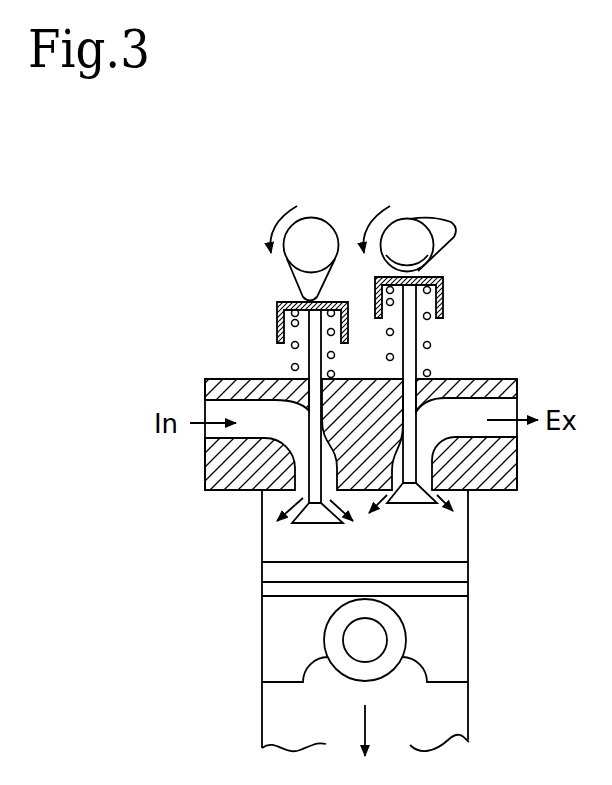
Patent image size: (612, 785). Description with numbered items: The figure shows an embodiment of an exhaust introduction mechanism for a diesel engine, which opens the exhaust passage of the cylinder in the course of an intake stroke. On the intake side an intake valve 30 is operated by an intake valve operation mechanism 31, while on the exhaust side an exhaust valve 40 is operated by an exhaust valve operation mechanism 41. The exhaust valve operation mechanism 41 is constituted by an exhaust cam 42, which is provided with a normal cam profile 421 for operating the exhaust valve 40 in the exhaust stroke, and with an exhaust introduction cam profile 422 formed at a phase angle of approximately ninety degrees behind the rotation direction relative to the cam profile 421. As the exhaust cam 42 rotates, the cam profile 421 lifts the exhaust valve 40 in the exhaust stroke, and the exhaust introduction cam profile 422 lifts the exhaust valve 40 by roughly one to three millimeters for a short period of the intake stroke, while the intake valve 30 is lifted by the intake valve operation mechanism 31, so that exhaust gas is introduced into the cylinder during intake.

The intake valve 30 is at (312, 357).
The intake valve operation mechanism 31 is at (322, 214).
The exhaust valve 40 is at (411, 336).
The exhaust valve operation mechanism 41 is at (471, 205).
The exhaust cam 42 is at (410, 214).
The normal cam profile 421 is at (456, 231).
The exhaust introduction cam profile 422 is at (420, 272).